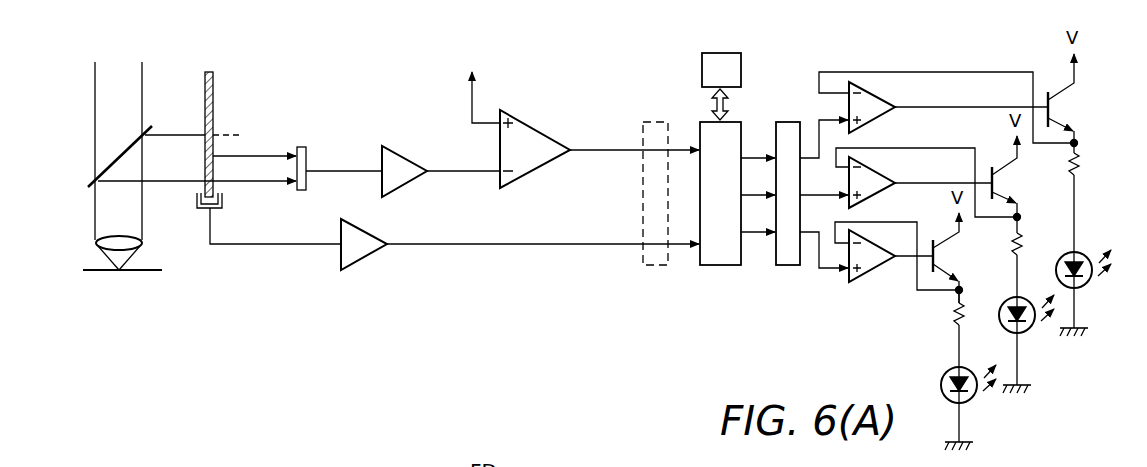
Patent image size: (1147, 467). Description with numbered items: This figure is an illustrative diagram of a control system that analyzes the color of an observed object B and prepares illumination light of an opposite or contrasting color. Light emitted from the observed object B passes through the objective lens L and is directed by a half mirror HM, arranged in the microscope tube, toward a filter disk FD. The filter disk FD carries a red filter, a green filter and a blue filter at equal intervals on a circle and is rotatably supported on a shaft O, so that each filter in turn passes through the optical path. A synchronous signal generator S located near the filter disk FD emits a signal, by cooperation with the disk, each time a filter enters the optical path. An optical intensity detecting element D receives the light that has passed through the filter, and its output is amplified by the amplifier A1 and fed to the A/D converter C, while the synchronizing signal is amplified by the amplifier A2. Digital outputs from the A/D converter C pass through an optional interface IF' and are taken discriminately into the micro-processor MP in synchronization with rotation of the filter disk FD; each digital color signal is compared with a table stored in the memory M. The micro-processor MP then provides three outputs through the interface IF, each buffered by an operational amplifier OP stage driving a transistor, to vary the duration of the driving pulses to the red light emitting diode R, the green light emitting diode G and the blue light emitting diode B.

The half mirror HM is at (115, 155).
The objective lens L is at (105, 238).
The observed object B is at (143, 271).
The filter disk FD is at (213, 78).
The shaft O is at (236, 134).
The synchronous signal generator S is at (222, 200).
The optical intensity detecting element D is at (307, 158).
The amplifier A1 is at (403, 157).
The amplifier A2 is at (363, 262).
The A/D converter C is at (543, 128).
The optional interface IF' is at (649, 216).
The micro-processor MP is at (722, 265).
The memory M is at (718, 53).
The interface IF is at (788, 219).
The operational amplifier OP is at (875, 93).
The green light emitting diode G is at (1021, 313).
The red light emitting diode R is at (1080, 244).